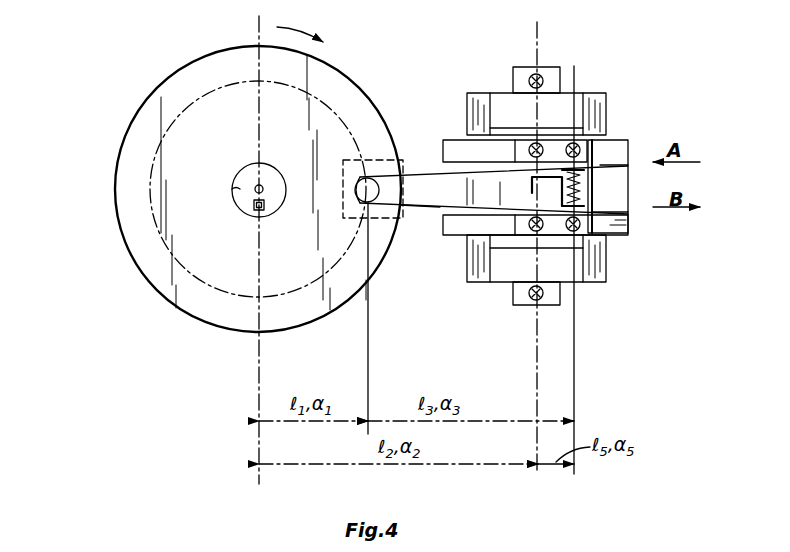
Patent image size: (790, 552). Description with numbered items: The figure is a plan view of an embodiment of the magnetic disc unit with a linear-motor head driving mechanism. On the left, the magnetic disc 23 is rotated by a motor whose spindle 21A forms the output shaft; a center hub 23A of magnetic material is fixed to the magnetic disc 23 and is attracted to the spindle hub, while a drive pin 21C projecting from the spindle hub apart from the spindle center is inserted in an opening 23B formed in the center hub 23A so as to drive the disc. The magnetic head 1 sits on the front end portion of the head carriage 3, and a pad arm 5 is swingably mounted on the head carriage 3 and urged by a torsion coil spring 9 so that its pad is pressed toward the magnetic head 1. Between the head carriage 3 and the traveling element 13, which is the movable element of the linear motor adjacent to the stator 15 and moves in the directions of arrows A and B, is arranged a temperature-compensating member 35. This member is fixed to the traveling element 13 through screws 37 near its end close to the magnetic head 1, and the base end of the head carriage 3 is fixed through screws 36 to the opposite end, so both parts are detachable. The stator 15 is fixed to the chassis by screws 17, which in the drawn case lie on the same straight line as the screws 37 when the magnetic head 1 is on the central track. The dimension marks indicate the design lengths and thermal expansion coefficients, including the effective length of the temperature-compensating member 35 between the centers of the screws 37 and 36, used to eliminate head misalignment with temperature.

The magnetic head 1 is at (366, 203).
The head carriage 3 is at (406, 213).
The pad arm 5 is at (428, 182).
The torsion coil spring 9 is at (530, 185).
The traveling element 13 is at (613, 167).
The stator 15 is at (587, 104).
The screws 17 is at (539, 76).
The spindle 21A is at (255, 189).
The drive pin 21C is at (255, 207).
The magnetic disc 23 is at (176, 303).
The center hub 23A is at (245, 202).
The opening 23B is at (262, 212).
The temperature-compensating member 35 is at (522, 240).
The screws 36 is at (594, 153).
The screws 37 is at (544, 144).